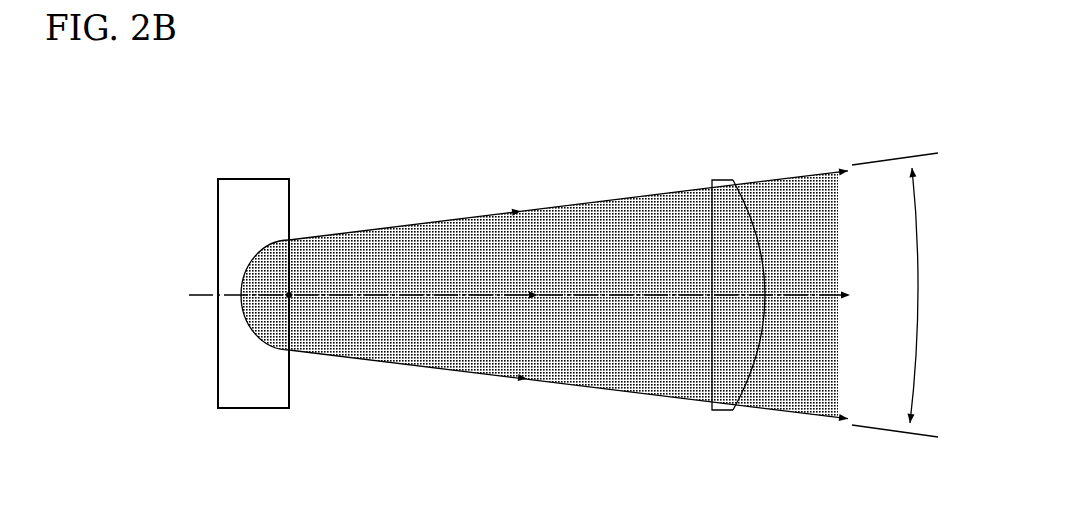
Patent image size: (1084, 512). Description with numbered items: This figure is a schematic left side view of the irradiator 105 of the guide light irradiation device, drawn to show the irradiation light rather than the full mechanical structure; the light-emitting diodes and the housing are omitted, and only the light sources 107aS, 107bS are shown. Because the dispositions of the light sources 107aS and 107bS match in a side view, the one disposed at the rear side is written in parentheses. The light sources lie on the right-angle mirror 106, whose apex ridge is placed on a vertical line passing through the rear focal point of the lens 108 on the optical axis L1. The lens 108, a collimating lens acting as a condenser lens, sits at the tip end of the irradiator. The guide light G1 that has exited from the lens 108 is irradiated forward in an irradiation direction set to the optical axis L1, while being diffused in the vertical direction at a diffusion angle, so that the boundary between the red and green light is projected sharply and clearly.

The irradiator 105 is at (175, 165).
The right-angle mirror 106 is at (237, 238).
The light source 107bS is at (290, 297).
The light source 107aS is at (289, 295).
The lens 108 is at (730, 207).
The guide light G1 is at (555, 197).
The optical axis L1 is at (540, 297).